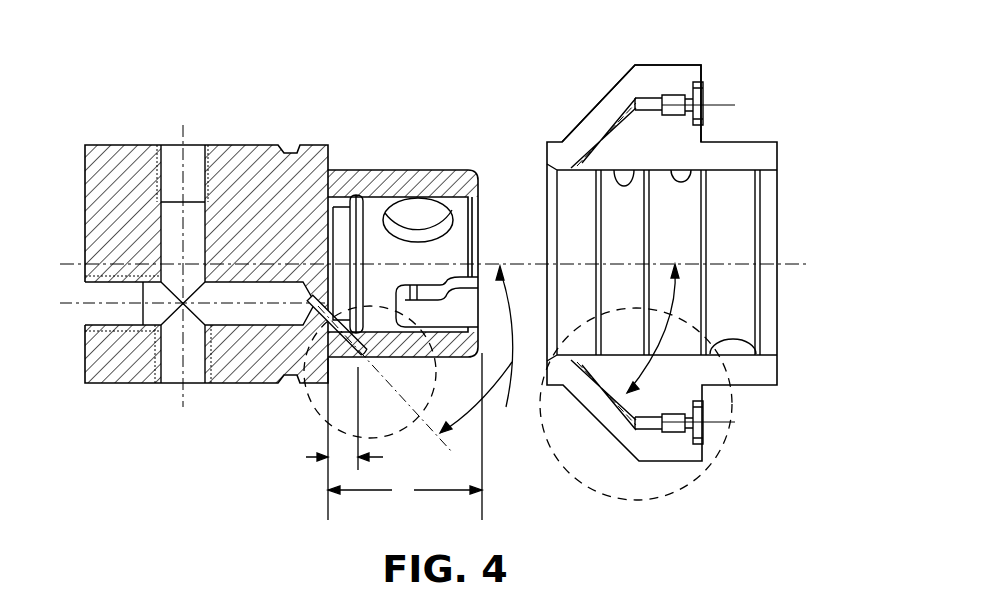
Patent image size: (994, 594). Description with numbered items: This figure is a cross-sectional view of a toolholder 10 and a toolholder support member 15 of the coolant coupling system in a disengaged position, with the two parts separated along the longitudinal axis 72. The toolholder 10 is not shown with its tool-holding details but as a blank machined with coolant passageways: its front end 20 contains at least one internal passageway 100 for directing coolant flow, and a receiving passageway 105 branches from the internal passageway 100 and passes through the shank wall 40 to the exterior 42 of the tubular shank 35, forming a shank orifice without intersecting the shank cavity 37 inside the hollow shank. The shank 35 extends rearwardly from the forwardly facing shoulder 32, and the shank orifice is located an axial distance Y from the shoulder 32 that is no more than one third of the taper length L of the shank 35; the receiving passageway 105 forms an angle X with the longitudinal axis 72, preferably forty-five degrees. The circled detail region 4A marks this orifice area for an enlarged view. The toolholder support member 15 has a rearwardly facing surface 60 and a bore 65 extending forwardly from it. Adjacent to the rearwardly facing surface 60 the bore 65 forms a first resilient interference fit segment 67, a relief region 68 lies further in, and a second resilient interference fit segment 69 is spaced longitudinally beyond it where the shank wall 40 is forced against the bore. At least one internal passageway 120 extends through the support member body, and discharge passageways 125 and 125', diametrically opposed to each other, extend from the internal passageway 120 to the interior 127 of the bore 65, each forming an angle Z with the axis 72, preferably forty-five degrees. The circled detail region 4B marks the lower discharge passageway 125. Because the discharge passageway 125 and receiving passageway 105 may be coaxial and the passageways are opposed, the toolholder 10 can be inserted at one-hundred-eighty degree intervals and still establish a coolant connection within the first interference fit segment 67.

The toolholder 10 is at (216, 100).
The front end 20 is at (115, 147).
The internal passageway 100 is at (95, 312).
The receiving passageway 105 is at (297, 372).
The forwardly facing shoulder 32 is at (331, 168).
The tubular shank 35 is at (423, 173).
The shank cavity 37 is at (372, 197).
The shank wall 40 is at (449, 347).
The exterior 42 is at (412, 353).
The detail region 4A is at (317, 413).
The detail region 4B is at (703, 468).
The taper length L is at (405, 436).
The orifice position Y is at (336, 418).
The angle X is at (505, 351).
The angle Z is at (665, 368).
The rearwardly facing surface 60 is at (550, 354).
The longitudinal axis 72 is at (793, 264).
The first resilient interference fit segment 67 is at (552, 187).
The relief region 68 is at (639, 166).
The second resilient interference fit segment 69 is at (702, 173).
The bore 65 is at (737, 187).
The interior of the bore 127 is at (737, 313).
The toolholder support member 15 is at (678, 68).
The discharge passageway 125' is at (594, 86).
The discharge passageway 125 is at (594, 458).
The internal passageway 120 is at (698, 82).